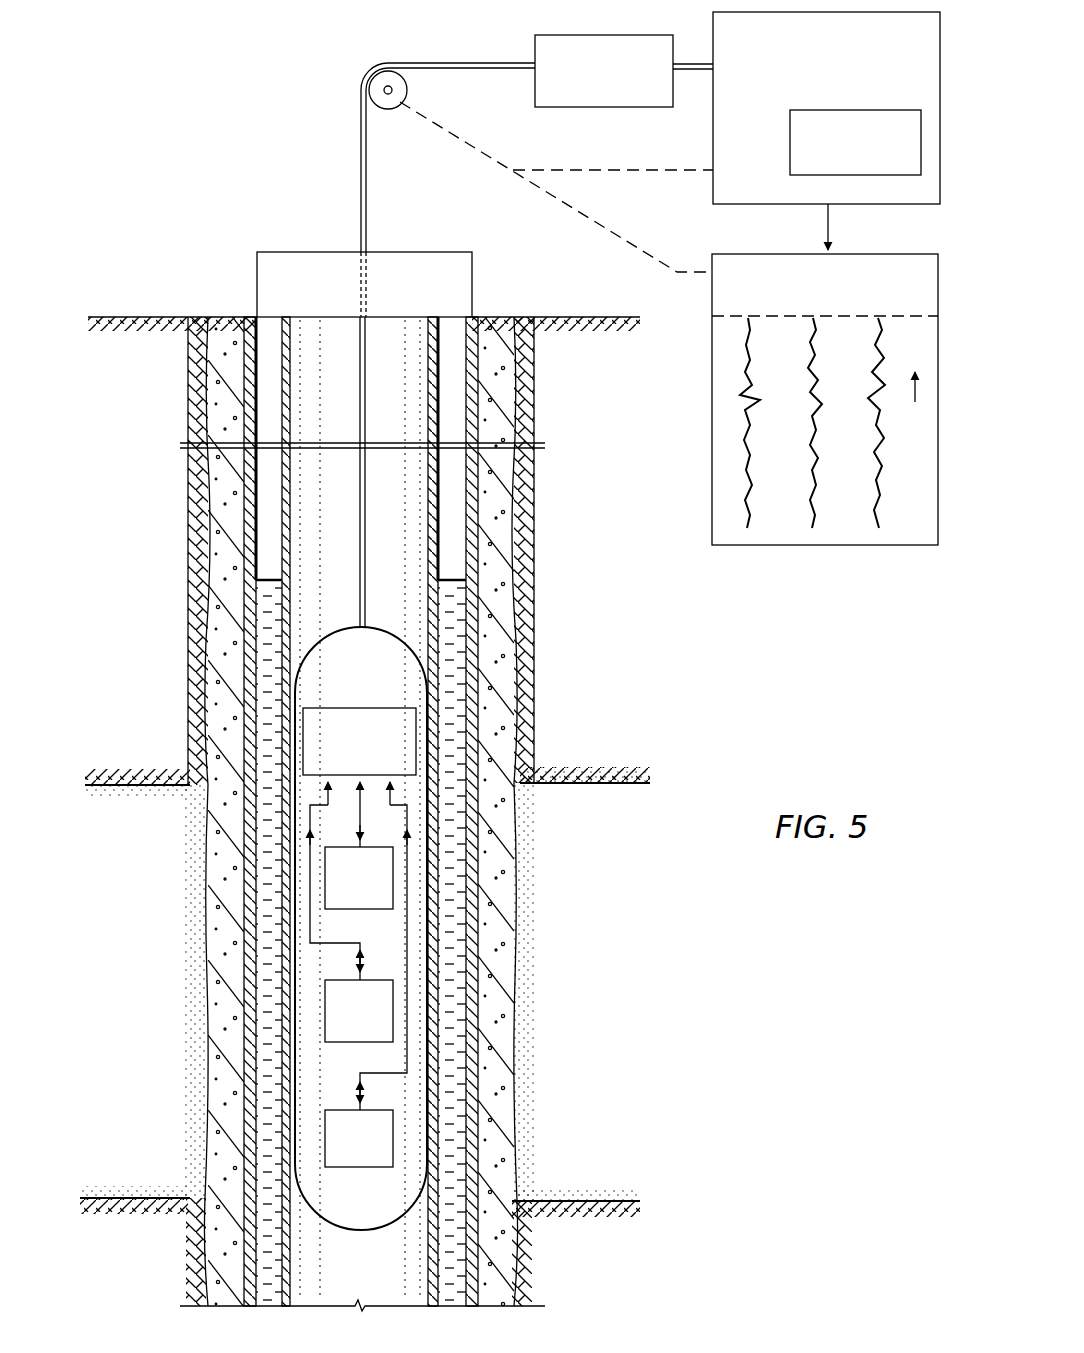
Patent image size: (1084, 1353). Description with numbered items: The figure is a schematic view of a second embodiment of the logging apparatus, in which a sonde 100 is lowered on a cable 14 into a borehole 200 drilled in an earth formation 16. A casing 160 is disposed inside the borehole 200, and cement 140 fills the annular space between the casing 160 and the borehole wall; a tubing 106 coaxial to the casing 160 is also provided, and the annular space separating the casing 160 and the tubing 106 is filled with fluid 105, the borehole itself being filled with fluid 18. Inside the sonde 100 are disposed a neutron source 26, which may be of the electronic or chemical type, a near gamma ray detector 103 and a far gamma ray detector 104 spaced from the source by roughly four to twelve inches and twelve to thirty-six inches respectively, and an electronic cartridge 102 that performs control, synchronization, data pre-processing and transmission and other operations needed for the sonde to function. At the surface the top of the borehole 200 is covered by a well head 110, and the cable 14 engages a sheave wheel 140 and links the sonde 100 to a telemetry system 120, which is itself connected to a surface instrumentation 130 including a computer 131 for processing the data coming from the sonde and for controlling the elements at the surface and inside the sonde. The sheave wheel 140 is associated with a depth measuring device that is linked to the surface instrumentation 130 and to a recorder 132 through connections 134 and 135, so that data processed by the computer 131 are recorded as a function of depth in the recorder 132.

The cable 14 is at (360, 152).
The sheave wheel 140 is at (369, 90).
The telemetry system 120 is at (590, 35).
The surface instrumentation 130 is at (876, 212).
The computer 131 is at (790, 146).
The recorder 132 is at (713, 308).
The connection 134 is at (626, 170).
The connection 135 is at (637, 248).
The well head 110 is at (290, 252).
The borehole 200 is at (305, 372).
The casing 160 is at (250, 510).
The fluid 105 is at (270, 596).
The electronic cartridge 102 is at (303, 728).
The far gamma ray detector 104 is at (325, 878).
The near gamma ray detector 103 is at (393, 1005).
The neutron source 26 is at (393, 1130).
The sonde 100 is at (295, 1080).
The fluid 18 is at (305, 1248).
The tubing 106 is at (482, 912).
The formation 16 is at (623, 956).